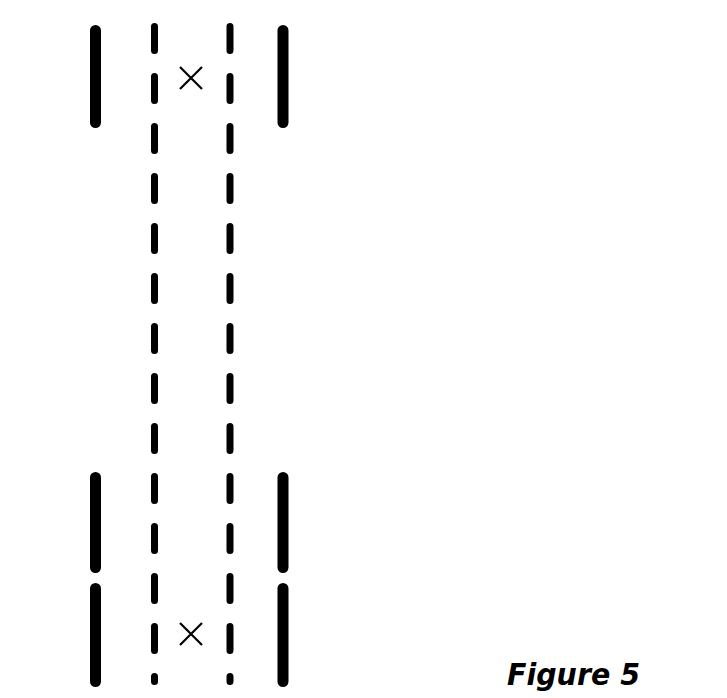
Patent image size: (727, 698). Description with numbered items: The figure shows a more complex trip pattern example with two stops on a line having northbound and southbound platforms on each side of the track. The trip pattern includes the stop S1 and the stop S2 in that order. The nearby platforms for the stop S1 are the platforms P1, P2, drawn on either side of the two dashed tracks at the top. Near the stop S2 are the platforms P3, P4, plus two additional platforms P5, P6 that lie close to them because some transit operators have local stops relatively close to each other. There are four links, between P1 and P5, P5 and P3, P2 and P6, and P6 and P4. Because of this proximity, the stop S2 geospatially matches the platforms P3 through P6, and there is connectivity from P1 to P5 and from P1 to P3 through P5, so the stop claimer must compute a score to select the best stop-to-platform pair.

The platform P1 is at (74, 77).
The platform P2 is at (304, 77).
The platform P3 is at (74, 635).
The platform P4 is at (304, 635).
The additional platform P5 is at (74, 523).
The additional platform P6 is at (304, 523).
The stop S1 is at (191, 64).
The stop S2 is at (191, 647).